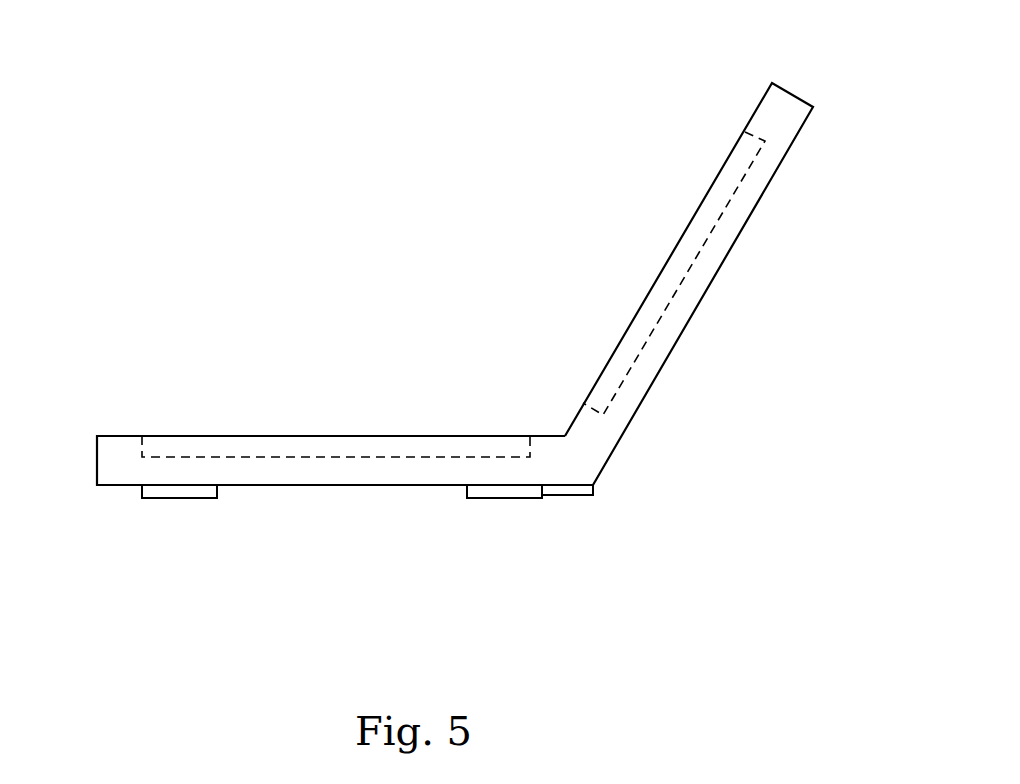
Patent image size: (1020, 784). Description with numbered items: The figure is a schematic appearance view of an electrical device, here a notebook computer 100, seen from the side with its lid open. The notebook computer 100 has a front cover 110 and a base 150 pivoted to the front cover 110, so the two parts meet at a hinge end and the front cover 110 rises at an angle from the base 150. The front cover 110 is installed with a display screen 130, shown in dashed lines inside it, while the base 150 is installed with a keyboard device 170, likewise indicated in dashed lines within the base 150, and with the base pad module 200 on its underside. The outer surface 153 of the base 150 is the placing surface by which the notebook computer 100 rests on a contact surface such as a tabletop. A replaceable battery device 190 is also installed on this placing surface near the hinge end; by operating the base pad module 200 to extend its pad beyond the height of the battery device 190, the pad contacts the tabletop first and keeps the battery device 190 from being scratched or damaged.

The notebook computer 100 is at (819, 44).
The front cover 110 is at (777, 129).
The display screen 130 is at (672, 270).
The base 150 is at (115, 435).
The outer surface 153 is at (350, 487).
The keyboard device 170 is at (309, 446).
The battery device 190 is at (582, 492).
The base pad module 200 is at (463, 500).